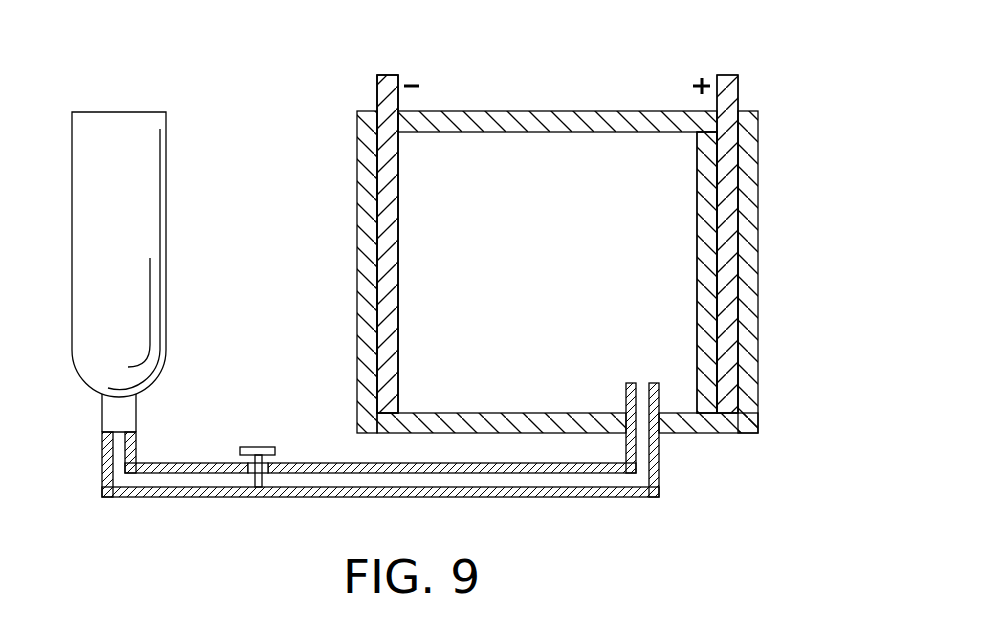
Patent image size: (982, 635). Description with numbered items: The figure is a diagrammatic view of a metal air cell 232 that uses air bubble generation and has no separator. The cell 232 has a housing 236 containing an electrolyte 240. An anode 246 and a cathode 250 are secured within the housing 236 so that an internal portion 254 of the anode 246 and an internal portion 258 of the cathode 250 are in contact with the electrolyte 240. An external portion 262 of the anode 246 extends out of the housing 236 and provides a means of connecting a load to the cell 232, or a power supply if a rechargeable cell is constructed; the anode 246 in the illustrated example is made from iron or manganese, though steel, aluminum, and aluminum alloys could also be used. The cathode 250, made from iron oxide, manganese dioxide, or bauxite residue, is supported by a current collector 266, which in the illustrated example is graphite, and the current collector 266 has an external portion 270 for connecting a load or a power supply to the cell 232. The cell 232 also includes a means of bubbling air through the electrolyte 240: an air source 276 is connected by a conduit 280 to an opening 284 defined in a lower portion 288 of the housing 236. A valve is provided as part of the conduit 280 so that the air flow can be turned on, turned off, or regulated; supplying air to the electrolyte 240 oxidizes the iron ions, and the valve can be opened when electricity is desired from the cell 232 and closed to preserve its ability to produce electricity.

The metal air cell 232 is at (256, 96).
The housing 236 is at (368, 222).
The electrolyte 240 is at (568, 283).
The anode 246 is at (386, 310).
The cathode 250 is at (708, 148).
The internal portion of the anode 254 is at (387, 173).
The internal portion of the cathode 258 is at (708, 215).
The external portion of the anode 262 is at (377, 98).
The current collector 266 is at (730, 372).
The external portion of the current collector 270 is at (738, 95).
The air source 276 is at (137, 195).
The conduit 280 is at (310, 463).
The opening 284 is at (626, 408).
The lower portion of the housing 288 is at (252, 447).